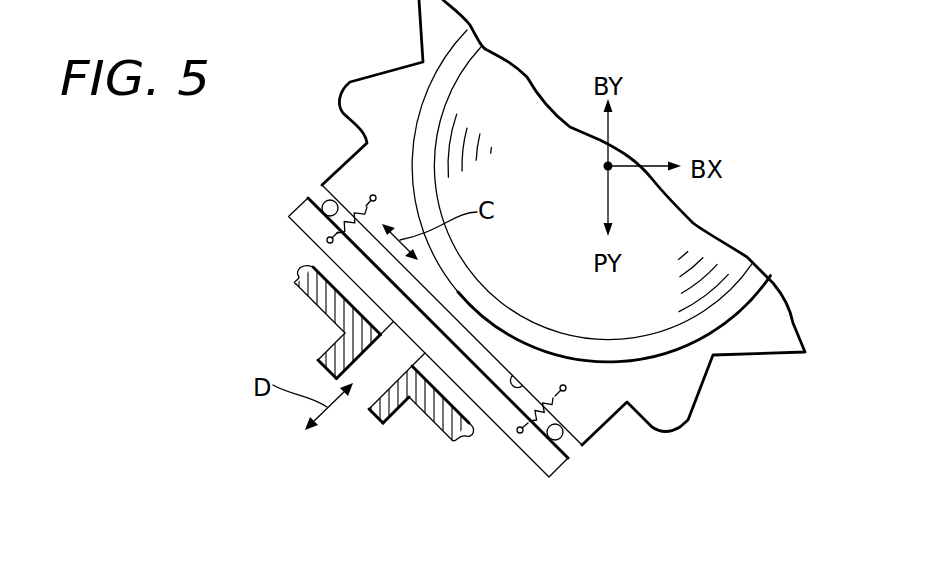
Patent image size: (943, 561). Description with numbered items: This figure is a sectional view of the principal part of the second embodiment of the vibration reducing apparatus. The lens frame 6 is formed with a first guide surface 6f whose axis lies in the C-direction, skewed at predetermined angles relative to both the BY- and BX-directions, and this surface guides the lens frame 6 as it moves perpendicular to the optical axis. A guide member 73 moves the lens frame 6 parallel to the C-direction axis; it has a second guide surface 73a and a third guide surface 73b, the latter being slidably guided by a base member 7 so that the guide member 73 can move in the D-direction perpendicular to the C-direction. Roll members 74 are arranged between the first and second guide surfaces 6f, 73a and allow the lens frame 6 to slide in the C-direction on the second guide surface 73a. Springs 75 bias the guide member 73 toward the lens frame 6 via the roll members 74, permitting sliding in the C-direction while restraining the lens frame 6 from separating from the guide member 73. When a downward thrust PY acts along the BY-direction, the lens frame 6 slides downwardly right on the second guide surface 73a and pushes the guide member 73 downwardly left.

The lens frame 6 is at (713, 375).
The first guide surface 6f is at (525, 390).
The base member 7 is at (425, 410).
The guide member 73 is at (558, 470).
The second guide surface 73a is at (476, 364).
The third guide surface 73b is at (340, 340).
The roll members 74 is at (320, 197).
The springs 75 is at (350, 205).